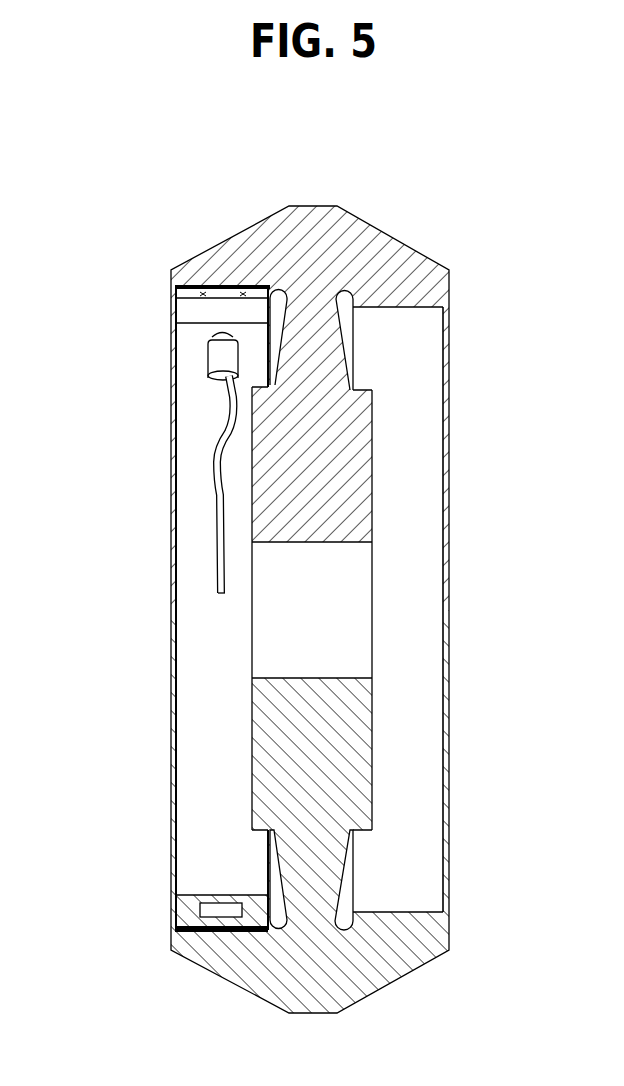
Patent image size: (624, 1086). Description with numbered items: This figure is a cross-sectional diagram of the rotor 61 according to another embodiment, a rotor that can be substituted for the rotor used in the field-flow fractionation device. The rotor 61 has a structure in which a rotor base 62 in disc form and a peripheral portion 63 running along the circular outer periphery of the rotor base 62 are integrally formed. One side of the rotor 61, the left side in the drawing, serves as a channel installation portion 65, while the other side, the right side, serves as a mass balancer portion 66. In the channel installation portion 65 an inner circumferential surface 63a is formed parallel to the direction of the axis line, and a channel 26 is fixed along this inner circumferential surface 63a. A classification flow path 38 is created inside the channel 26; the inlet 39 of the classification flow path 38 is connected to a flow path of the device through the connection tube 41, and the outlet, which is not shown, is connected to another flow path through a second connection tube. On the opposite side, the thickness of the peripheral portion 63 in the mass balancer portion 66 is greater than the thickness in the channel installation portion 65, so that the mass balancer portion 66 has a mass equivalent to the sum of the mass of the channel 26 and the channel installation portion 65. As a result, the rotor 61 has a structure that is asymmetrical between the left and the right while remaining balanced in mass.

The rotor 61 is at (510, 140).
The peripheral portion 63 is at (407, 278).
The inner circumferential surface 63a is at (185, 291).
The inlet 39 is at (217, 353).
The connection tube 41 is at (227, 408).
The rotor base 62 is at (342, 470).
The channel installation portion 65 is at (208, 807).
The mass balancer portion 66 is at (417, 802).
The channel 26 is at (188, 917).
The classification flow path 38 is at (227, 910).